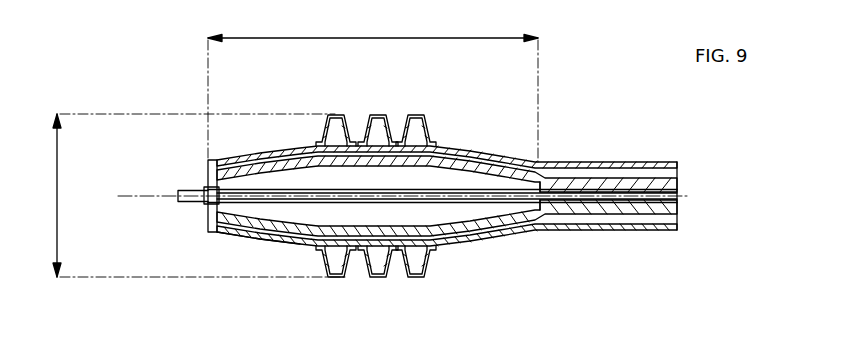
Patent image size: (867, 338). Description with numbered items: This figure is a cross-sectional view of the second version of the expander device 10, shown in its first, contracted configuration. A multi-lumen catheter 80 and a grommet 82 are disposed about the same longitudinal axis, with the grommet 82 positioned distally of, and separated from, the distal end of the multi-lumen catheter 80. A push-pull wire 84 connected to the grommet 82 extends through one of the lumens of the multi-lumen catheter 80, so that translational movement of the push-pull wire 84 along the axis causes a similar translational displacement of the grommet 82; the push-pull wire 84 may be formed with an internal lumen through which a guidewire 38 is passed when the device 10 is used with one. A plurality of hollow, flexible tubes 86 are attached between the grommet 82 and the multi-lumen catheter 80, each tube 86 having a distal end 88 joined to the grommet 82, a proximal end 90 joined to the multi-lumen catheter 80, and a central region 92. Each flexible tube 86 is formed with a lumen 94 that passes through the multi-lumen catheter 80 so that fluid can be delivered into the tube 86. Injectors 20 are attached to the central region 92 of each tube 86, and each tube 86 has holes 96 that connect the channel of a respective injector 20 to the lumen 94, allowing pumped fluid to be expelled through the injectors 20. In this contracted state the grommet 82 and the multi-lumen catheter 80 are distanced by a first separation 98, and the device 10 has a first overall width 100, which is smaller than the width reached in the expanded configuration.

The device 10 is at (566, 118).
The injectors 20 is at (336, 115).
The guidewire 38 is at (182, 205).
The multi-lumen catheter 80 is at (637, 162).
The grommet 82 is at (206, 173).
The push-pull wire 84 is at (485, 206).
The flexible tubes 86 is at (460, 147).
The distal end 88 is at (228, 237).
The proximal end 90 is at (530, 237).
The central region 92 is at (397, 253).
The lumen 94 is at (463, 236).
The holes 96 is at (343, 243).
The first separation 98 is at (338, 38).
The first overall width 100 is at (59, 245).